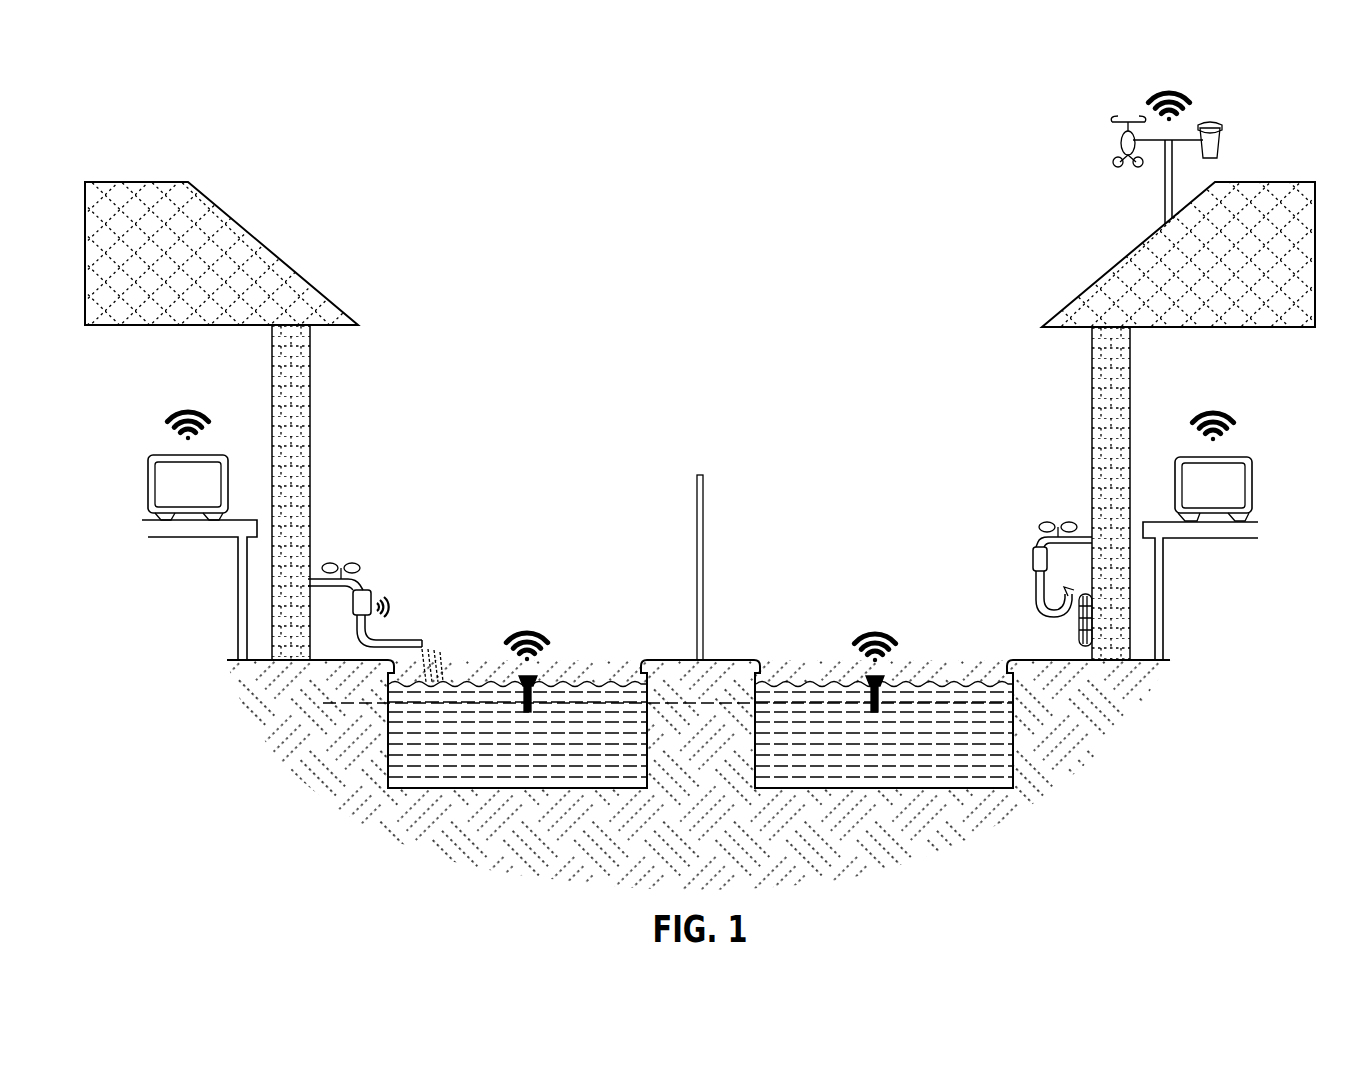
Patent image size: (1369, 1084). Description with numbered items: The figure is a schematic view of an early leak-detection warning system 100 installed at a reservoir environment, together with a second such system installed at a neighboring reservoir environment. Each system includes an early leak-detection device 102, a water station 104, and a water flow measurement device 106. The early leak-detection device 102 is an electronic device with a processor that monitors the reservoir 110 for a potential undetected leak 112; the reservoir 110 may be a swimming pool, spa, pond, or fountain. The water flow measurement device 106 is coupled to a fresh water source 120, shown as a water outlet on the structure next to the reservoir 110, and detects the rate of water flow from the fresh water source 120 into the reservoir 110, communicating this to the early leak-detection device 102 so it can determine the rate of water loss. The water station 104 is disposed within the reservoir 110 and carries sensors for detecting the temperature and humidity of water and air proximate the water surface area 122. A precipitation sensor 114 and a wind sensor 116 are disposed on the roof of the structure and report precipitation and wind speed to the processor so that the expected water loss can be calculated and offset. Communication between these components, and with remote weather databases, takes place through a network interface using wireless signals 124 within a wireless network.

The early leak-detection warning system 100 is at (700, 750).
The early leak-detection device 102 is at (152, 455).
The water station 104 is at (537, 678).
The water flow measurement device 106 is at (372, 592).
The reservoir 110 is at (624, 668).
The potential undetected leak 112 is at (250, 806).
The precipitation sensor 114 is at (1220, 140).
The wind sensor 116 is at (1118, 140).
The fresh water source 120 is at (347, 570).
The water surface area 122 is at (452, 683).
The wireless signals 124 is at (180, 410).